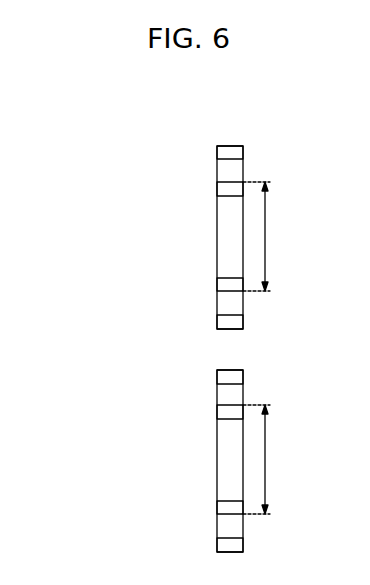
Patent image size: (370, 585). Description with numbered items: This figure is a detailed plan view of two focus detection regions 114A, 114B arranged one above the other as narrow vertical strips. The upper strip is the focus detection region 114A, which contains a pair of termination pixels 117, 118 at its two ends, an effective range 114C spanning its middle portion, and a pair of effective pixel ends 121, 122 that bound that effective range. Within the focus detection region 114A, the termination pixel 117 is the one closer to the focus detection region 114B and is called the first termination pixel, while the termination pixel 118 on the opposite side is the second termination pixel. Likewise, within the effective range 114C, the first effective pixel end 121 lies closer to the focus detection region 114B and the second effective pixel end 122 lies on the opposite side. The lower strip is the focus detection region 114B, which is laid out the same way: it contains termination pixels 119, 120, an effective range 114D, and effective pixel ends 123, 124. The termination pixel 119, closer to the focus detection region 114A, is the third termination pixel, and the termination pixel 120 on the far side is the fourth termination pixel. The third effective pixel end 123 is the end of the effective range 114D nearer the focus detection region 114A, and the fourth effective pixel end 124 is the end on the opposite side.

The focus detection region 114A is at (99, 113).
The focus detection region 114B is at (99, 338).
The effective range 114C is at (266, 238).
The effective range 114D is at (266, 463).
The termination pixel 117 is at (243, 322).
The termination pixel 118 is at (244, 152).
The termination pixel 119 is at (244, 376).
The termination pixel 120 is at (243, 545).
The first effective pixel end 121 is at (222, 285).
The second effective pixel end 122 is at (222, 189).
The third effective pixel end 123 is at (222, 412).
The fourth effective pixel end 124 is at (222, 508).